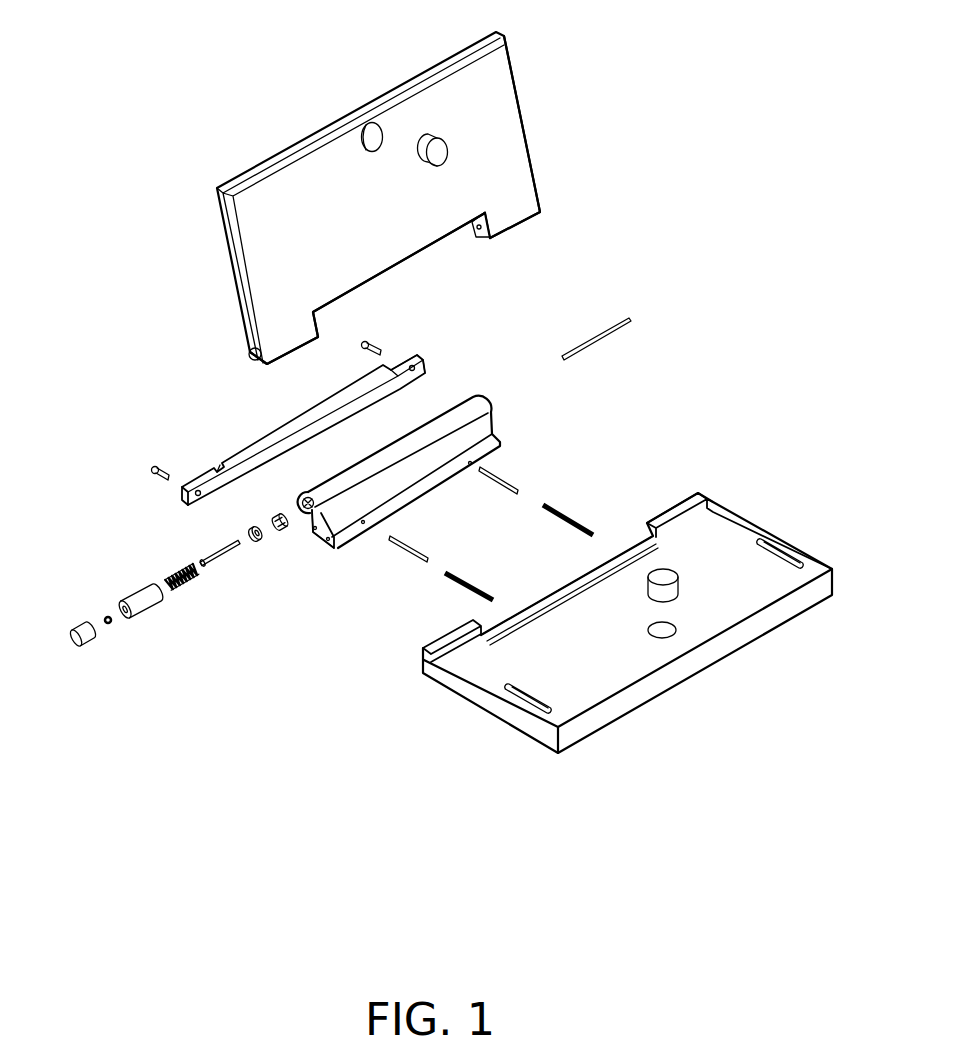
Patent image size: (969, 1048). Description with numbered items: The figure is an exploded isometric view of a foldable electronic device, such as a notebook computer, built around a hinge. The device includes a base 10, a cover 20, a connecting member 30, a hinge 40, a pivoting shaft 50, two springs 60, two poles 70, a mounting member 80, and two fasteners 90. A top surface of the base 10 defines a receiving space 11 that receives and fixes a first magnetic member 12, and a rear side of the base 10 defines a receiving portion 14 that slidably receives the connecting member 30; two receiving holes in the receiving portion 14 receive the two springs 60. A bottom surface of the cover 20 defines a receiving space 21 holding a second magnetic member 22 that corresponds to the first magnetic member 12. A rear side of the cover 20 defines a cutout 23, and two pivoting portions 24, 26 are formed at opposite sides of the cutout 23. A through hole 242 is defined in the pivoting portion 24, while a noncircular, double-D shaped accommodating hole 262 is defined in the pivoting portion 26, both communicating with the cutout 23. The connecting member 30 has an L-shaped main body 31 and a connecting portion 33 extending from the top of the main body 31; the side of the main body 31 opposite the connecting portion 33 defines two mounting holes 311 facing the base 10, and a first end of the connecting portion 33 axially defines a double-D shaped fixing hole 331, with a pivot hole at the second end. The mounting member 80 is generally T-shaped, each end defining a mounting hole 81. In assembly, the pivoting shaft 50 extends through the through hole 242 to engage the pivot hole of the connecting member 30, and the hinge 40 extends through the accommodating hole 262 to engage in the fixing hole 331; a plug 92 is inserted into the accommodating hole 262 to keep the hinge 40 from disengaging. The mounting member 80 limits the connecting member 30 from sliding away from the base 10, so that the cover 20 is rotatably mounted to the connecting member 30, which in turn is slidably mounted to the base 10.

The base 10 is at (740, 538).
The receiving space 11 is at (676, 628).
The first magnetic member 12 is at (667, 572).
The receiving portion 14 is at (597, 568).
The cover 20 is at (490, 68).
The receiving space 21 is at (372, 125).
The second magnetic member 22 is at (445, 148).
The cutout 23 is at (432, 256).
The pivoting portion 24 is at (515, 203).
The through hole 242 is at (478, 234).
The pivoting portion 26 is at (290, 338).
The accommodating hole 262 is at (250, 355).
The connecting member 30 is at (438, 483).
The main body 31 is at (333, 513).
The connecting portion 33 is at (480, 410).
The mounting holes 311 is at (469, 466).
The fixing hole 331 is at (305, 508).
The hinge 40 is at (293, 541).
The pivoting shaft 50 is at (610, 328).
The springs 60 is at (567, 512).
The poles 70 is at (507, 480).
The mounting member 80 is at (242, 443).
The mounting hole 81 is at (420, 373).
The fasteners 90 is at (150, 476).
The plug 92 is at (75, 623).